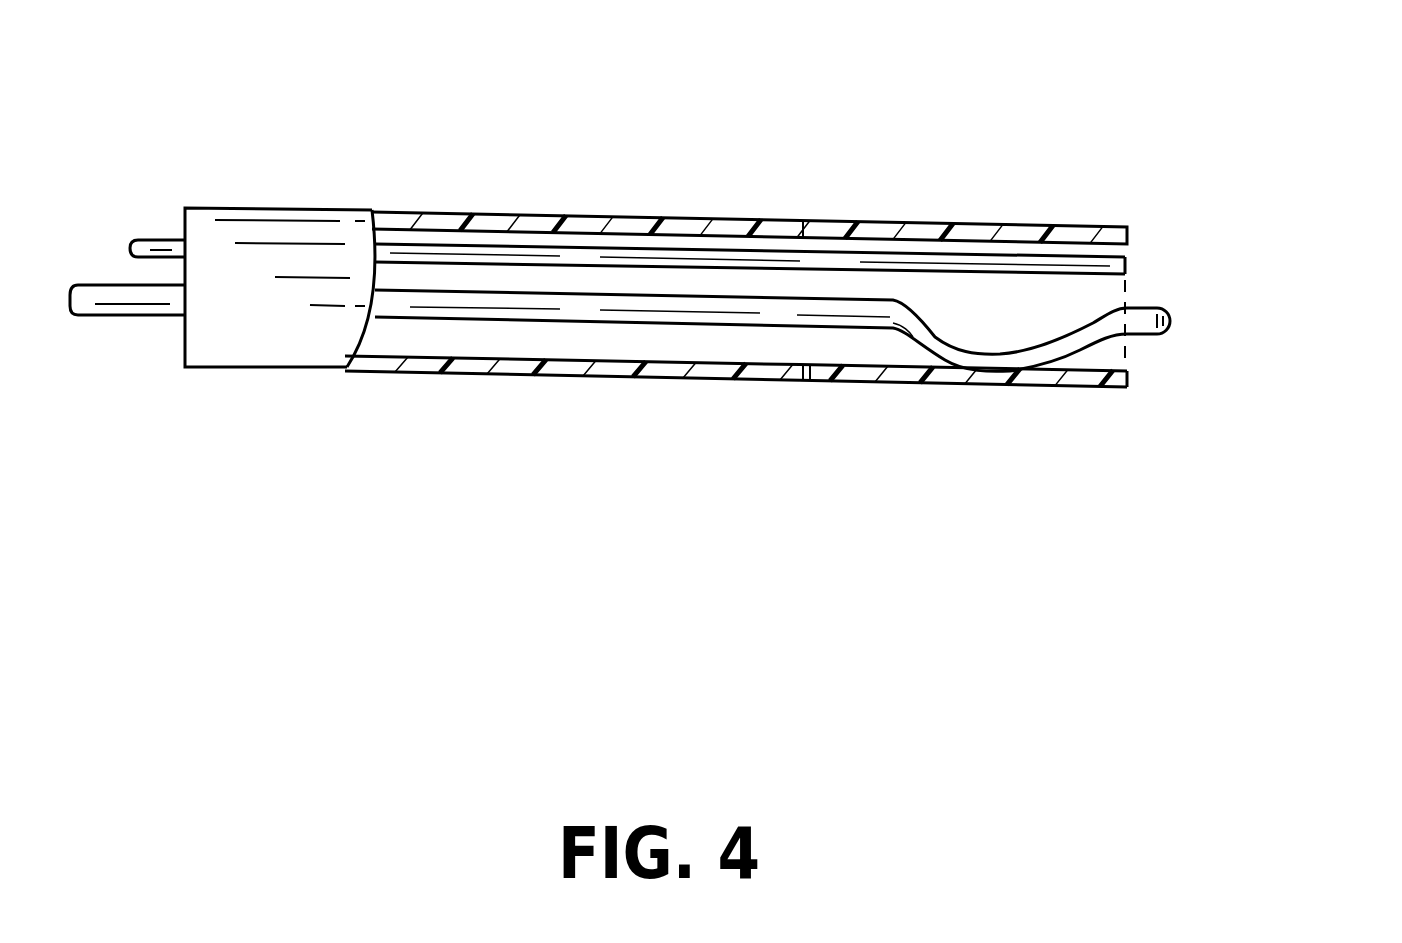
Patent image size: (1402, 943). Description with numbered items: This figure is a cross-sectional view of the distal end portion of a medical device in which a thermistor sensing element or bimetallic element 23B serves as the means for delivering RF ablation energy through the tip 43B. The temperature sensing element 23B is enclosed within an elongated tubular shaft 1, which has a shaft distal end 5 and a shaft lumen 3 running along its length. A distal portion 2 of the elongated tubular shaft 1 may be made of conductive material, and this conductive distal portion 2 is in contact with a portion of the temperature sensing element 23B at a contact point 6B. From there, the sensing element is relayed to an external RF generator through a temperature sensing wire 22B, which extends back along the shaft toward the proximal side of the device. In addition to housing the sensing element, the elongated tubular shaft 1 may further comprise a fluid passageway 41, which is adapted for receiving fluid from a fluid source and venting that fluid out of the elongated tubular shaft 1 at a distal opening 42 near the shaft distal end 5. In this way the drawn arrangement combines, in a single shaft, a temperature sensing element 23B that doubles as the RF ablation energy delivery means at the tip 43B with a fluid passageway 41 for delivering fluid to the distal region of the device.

The elongated tubular shaft 1 is at (1070, 220).
The distal portion 2 is at (1128, 150).
The shaft lumen 3 is at (627, 343).
The shaft distal end 5 is at (1128, 388).
The contact point 6B is at (1000, 392).
The temperature sensing wire 22B is at (470, 327).
The thermistor sensing element or bimetallic element 23B is at (1180, 346).
The fluid passageway 41 is at (420, 240).
The distal opening 42 is at (1148, 252).
The tip 43B is at (1175, 312).